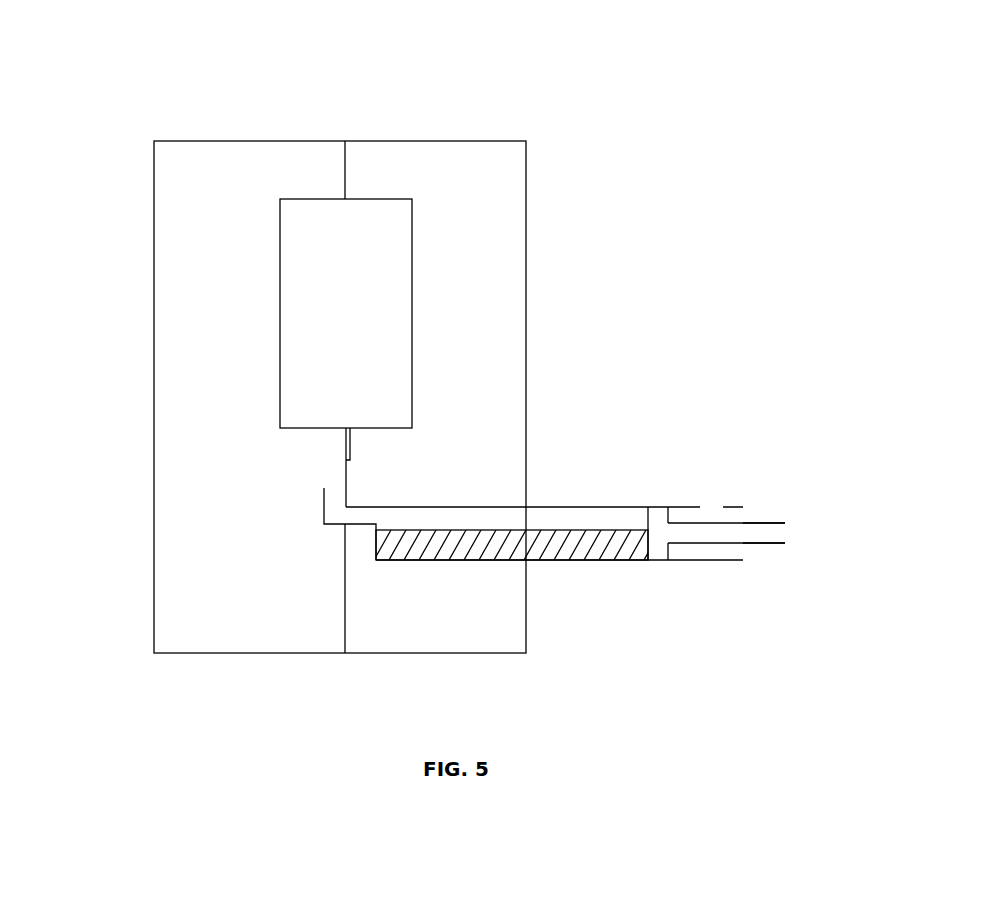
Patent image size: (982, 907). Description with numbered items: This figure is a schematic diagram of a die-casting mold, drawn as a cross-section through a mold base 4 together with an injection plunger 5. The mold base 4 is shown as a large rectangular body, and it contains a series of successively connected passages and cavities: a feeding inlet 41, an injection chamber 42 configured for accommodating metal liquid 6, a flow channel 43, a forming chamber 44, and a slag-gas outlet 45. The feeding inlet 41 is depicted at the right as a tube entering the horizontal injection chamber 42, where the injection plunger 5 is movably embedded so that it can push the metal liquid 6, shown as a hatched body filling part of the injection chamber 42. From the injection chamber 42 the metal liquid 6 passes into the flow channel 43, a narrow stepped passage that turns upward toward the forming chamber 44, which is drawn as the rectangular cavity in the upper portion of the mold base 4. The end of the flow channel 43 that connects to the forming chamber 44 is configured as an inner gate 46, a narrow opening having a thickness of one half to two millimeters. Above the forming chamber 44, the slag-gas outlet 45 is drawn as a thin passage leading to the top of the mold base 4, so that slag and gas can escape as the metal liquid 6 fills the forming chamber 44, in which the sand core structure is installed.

The mold base 4 is at (580, 140).
The feeding inlet 41 is at (713, 507).
The injection chamber 42 is at (595, 510).
The flow channel 43 is at (335, 507).
The forming chamber 44 is at (322, 323).
The slag-gas outlet 45 is at (343, 197).
The inner gate 46 is at (324, 488).
The injection plunger 5 is at (716, 535).
The metal liquid 6 is at (573, 553).